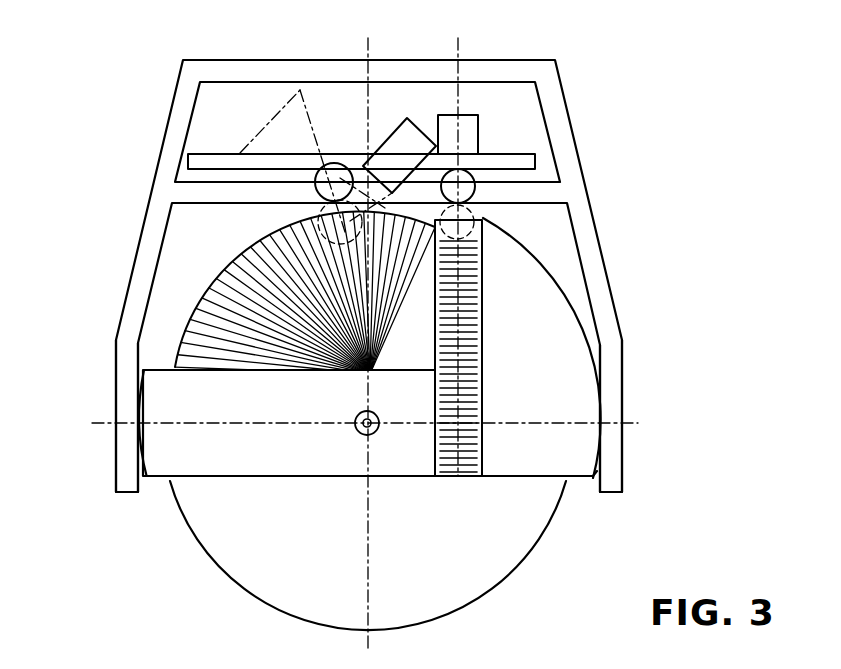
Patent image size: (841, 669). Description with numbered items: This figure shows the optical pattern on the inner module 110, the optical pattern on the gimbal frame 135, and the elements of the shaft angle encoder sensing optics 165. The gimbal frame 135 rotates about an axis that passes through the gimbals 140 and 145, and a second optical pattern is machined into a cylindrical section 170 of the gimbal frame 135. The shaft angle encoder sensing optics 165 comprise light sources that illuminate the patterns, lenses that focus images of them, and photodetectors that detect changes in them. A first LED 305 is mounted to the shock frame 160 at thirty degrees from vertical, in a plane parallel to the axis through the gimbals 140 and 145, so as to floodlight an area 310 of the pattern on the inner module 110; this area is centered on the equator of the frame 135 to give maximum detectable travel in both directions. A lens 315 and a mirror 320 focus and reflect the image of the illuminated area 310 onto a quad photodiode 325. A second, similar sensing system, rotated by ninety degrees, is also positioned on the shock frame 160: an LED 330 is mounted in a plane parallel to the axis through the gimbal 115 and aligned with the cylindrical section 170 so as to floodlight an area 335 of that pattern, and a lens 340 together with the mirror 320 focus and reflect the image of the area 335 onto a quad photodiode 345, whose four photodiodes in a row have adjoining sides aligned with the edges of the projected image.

The inner module 110 is at (250, 592).
The gimbal 115 is at (364, 434).
The gimbal frame 135 is at (250, 453).
The gimbal 140 is at (115, 413).
The gimbal 145 is at (622, 415).
The shock frame 160 is at (572, 188).
The shaft angle encoder sensing optics 165 is at (670, 35).
The cylindrical section 170 is at (460, 488).
The first LED 305 is at (395, 141).
The illuminated area 310 is at (300, 238).
The lens 315 is at (318, 166).
The mirror 320 is at (362, 82).
The quad photodiode 325 is at (238, 152).
The LED 330 is at (472, 103).
The illuminated area 335 is at (478, 212).
The lens 340 is at (482, 212).
The quad photodiode 345 is at (472, 156).